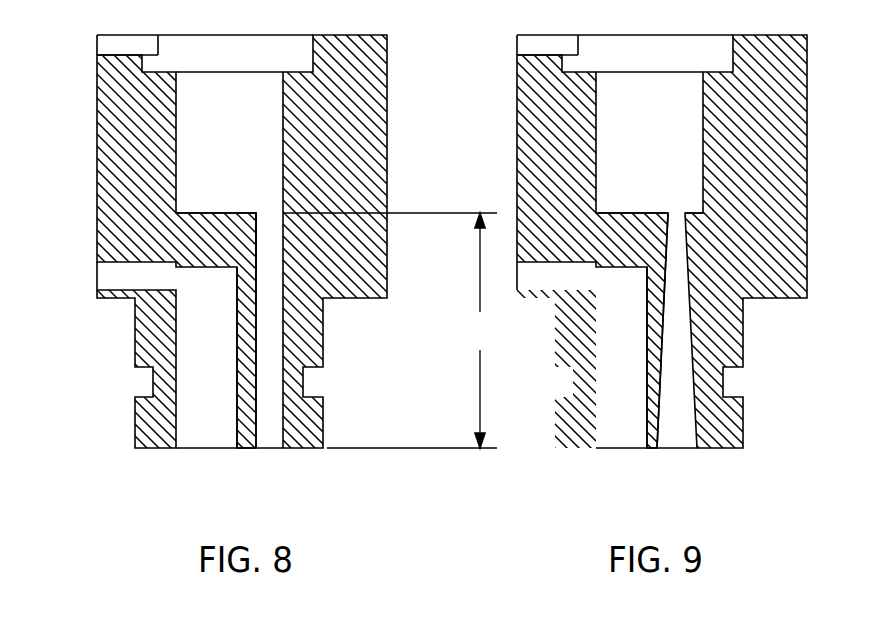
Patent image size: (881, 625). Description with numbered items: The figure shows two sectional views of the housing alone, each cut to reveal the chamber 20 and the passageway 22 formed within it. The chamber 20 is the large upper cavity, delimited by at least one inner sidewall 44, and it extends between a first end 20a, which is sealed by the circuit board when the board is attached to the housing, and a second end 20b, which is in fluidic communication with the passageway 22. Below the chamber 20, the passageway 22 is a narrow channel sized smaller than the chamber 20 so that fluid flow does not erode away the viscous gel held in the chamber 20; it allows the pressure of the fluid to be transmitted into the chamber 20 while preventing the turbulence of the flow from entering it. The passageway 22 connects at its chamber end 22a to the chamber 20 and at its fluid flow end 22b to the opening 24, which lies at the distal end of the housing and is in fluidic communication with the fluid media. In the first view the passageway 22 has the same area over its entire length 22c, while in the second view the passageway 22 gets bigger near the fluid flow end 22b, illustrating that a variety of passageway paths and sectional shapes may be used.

In FIG. 8, the chamber 20 is at (215, 160).
In FIG. 9, the chamber 20 is at (642, 160).
In FIG. 8, the first end of chamber 20a is at (217, 93).
In FIG. 8, the second end of chamber 20b is at (223, 200).
In FIG. 8, the inner sidewall 44 is at (285, 120).
In FIG. 9, the inner sidewall 44 is at (705, 122).
In FIG. 8, the passageway 22 is at (271, 308).
In FIG. 9, the passageway 22 is at (680, 289).
In FIG. 8, the chamber end of passageway 22a is at (270, 223).
In FIG. 9, the chamber end of passageway 22a is at (680, 223).
In FIG. 8, the fluid flow end of passageway 22b is at (270, 448).
In FIG. 9, the fluid flow end of passageway 22b is at (680, 448).
In FIG. 8, the opening 24 is at (320, 475).
In FIG. 9, the opening 24 is at (732, 475).
In FIG. 8, the length of passageway 22c is at (391, 330).